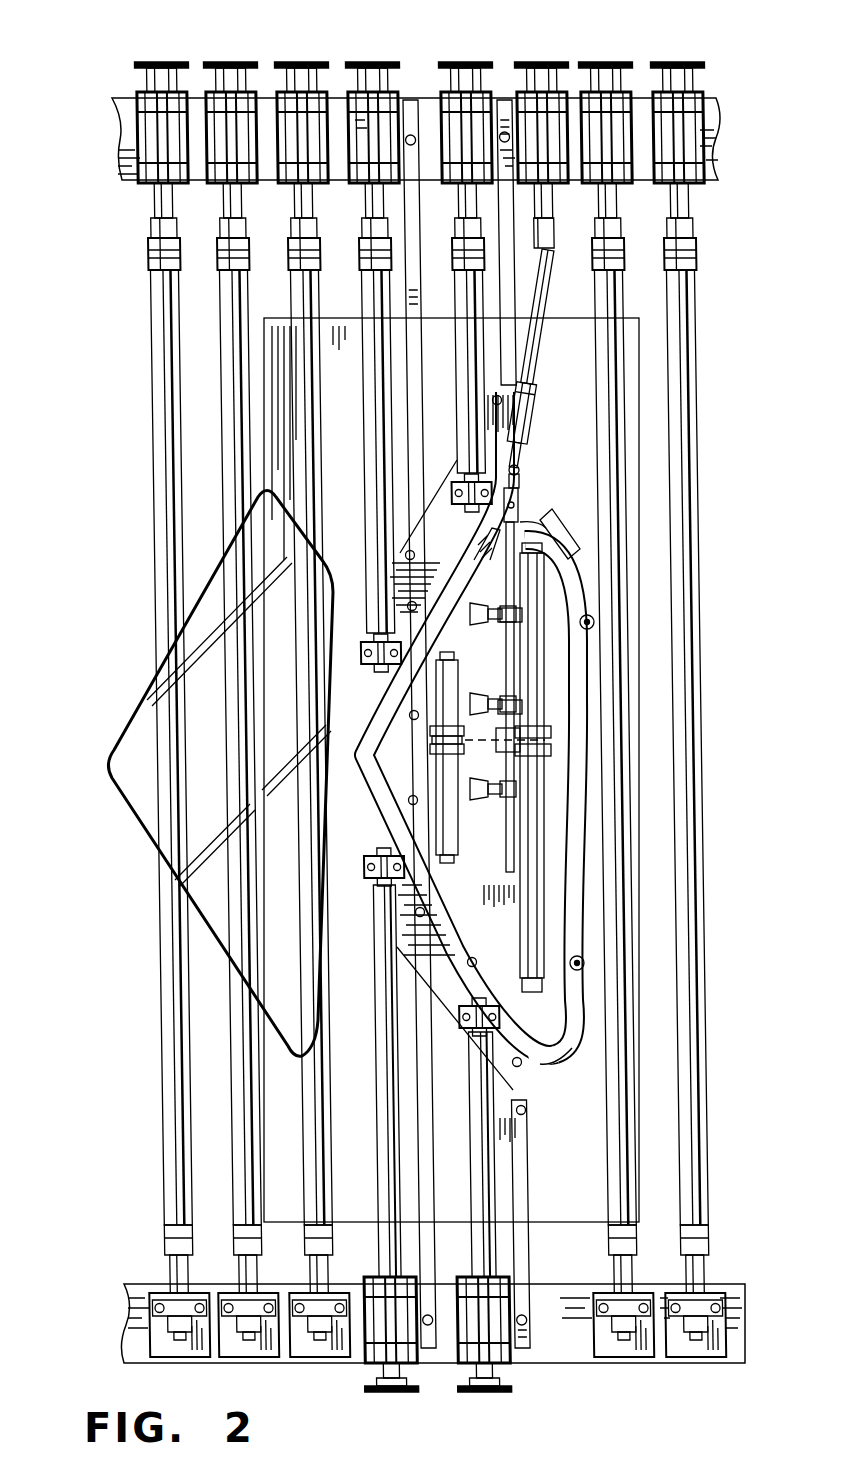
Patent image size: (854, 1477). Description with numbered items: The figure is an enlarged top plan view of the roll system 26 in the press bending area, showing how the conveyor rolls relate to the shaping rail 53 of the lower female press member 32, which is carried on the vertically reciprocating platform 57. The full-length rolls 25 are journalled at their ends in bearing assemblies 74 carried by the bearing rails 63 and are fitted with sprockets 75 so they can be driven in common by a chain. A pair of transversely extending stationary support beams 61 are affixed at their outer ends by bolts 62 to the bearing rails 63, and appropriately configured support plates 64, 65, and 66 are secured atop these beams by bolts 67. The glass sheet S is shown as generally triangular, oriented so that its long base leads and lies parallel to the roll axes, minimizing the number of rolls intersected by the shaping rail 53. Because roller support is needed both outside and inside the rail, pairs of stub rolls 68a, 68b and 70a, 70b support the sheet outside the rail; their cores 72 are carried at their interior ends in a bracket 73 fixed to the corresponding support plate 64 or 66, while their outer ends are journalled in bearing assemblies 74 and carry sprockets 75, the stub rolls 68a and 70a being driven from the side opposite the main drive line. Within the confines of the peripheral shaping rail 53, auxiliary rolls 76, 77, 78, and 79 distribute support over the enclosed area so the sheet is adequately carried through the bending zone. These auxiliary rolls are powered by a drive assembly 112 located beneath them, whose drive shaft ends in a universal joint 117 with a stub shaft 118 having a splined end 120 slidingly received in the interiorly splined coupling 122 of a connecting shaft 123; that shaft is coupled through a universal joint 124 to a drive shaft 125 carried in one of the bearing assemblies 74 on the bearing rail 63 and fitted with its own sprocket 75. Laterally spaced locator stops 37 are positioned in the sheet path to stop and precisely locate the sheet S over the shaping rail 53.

The roll system 26 is at (391, 720).
The bearing assemblies 74 is at (124, 95).
The sprockets 75 is at (238, 62).
The drive shaft 125 is at (548, 66).
The bolts 62 is at (411, 134).
The bearing rails 63 is at (122, 140).
The rolls 25 is at (160, 325).
The stub roll 70b is at (452, 300).
The stub roll 70a is at (472, 1182).
The stub roll 68b is at (364, 352).
The stub roll 68a is at (366, 1015).
The stationary support beams 61 is at (497, 344).
The platform 57 is at (356, 425).
The support plate 66 is at (442, 495).
The bolts 67 is at (402, 550).
The cores 72 is at (415, 555).
The bracket 73 is at (366, 640).
The universal joint 124 is at (546, 240).
The connecting shaft 123 is at (550, 288).
The drive assembly 112 is at (552, 359).
The splined coupling 122 is at (540, 420).
The splined end 120 is at (548, 452).
The stub shaft 118 is at (519, 470).
The universal joint 117 is at (520, 520).
The auxiliary roll 79 is at (550, 574).
The locator stops 37 is at (594, 622).
The shaping rail 53 is at (590, 880).
The support plate 64 is at (444, 1000).
The lower female press member 32 is at (586, 1022).
The support plate 65 is at (508, 883).
The auxiliary roll 76 is at (466, 804).
The auxiliary roll 77 is at (466, 700).
The auxiliary roll 78 is at (530, 890).
The glass sheet S is at (210, 753).